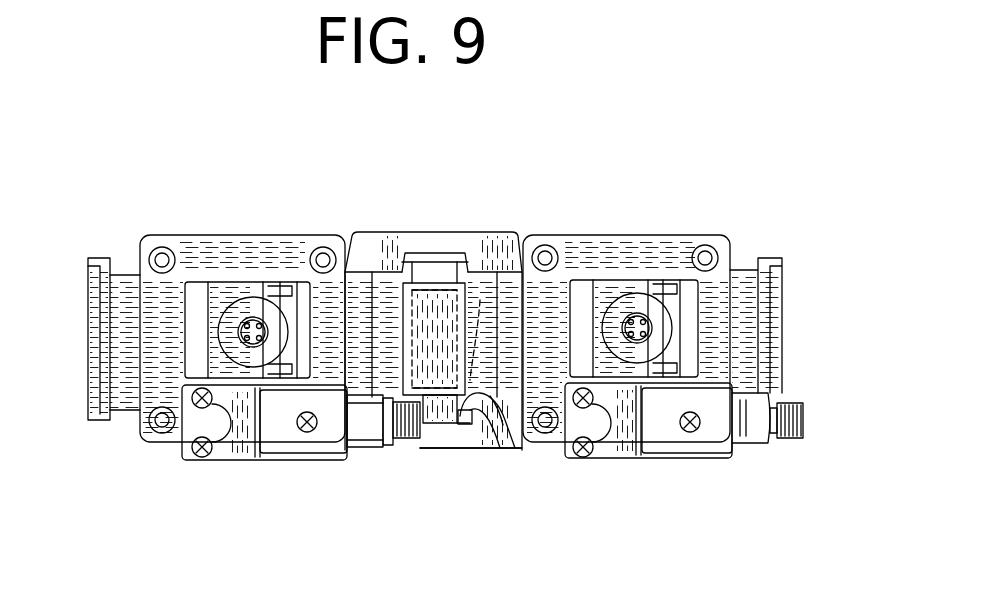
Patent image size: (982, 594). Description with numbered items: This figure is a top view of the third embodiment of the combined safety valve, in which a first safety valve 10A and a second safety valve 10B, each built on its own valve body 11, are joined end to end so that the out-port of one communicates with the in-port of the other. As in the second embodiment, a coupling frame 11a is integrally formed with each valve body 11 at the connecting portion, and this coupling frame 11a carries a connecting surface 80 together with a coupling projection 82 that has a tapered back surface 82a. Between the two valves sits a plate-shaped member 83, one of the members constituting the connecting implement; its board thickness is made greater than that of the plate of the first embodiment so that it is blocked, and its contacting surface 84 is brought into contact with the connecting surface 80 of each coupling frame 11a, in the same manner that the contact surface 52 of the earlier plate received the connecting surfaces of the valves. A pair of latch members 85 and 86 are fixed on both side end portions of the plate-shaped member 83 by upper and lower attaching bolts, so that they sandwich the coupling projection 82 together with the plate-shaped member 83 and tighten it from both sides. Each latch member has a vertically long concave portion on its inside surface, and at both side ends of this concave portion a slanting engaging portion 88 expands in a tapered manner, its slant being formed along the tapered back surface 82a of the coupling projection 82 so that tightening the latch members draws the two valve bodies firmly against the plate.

The first safety valve 10A is at (663, 343).
The second safety valve 10B is at (240, 343).
The valve body 11 is at (357, 290).
The coupling frame 11a is at (387, 293).
The contact surface 52 is at (412, 258).
The connecting surface 80 is at (420, 363).
The coupling projection 82 is at (470, 416).
The tapered back surface 82a is at (498, 412).
The plate-shaped member 83 is at (430, 256).
The contacting surface 84 is at (480, 300).
The latch member 85 is at (488, 448).
The latch member 86 is at (452, 258).
The slanting engaging portion 88 is at (462, 277).